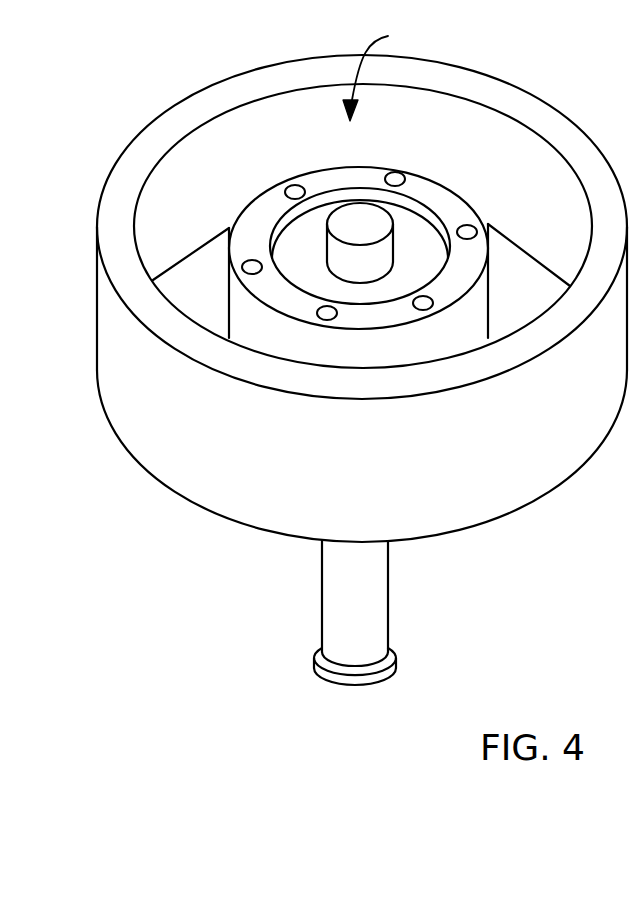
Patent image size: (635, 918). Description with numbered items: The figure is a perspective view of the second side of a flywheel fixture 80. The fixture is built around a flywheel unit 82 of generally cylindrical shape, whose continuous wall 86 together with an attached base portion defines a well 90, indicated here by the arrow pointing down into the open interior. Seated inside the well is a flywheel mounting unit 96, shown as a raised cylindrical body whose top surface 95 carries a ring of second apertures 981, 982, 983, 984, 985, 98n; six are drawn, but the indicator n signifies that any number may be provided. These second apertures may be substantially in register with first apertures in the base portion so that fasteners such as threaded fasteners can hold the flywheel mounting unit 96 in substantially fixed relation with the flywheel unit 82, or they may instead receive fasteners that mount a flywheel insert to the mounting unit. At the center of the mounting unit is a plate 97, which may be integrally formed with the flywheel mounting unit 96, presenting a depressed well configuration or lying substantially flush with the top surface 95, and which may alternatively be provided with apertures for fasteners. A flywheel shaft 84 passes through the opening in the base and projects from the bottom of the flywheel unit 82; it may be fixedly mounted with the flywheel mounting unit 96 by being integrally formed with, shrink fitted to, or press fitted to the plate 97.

The flywheel fixture 80 is at (326, 356).
The flywheel unit 82 is at (107, 171).
The flywheel shaft 84 is at (388, 607).
The continuous wall 86 is at (266, 84).
The well 90 is at (380, 74).
The top surface 95 is at (260, 210).
The flywheel mounting unit 96 is at (343, 166).
The plate 97 is at (424, 258).
The second aperture 981 is at (433, 309).
The second aperture 982 is at (474, 224).
The second aperture 983 is at (403, 172).
The second aperture 984 is at (289, 185).
The second aperture 985 is at (247, 274).
The second aperture 98n is at (323, 320).